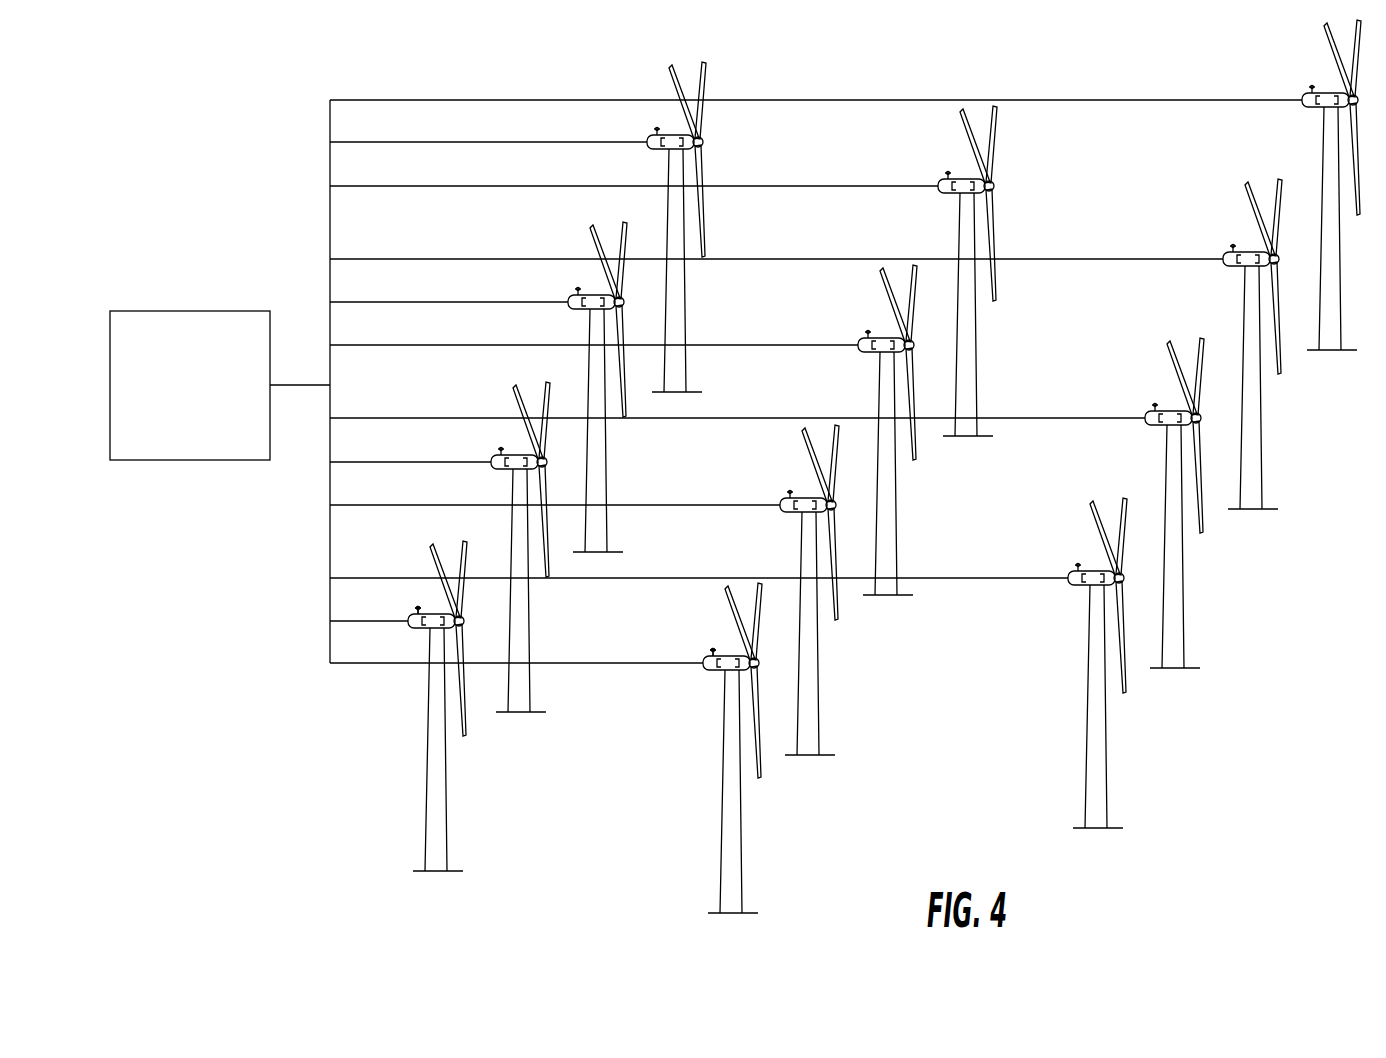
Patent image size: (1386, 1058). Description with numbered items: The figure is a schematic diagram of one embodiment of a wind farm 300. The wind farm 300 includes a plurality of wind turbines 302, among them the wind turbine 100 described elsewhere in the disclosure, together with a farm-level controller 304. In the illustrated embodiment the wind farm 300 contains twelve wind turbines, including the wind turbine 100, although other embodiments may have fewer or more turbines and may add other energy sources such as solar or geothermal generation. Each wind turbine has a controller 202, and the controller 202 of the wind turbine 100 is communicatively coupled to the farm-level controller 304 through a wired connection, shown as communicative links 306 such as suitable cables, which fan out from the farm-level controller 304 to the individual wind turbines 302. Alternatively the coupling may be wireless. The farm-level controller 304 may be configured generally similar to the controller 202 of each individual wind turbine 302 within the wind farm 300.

The wind farm 300 is at (235, 156).
The farm-level controller 304 is at (208, 395).
The communicative links 306 is at (497, 186).
The wind turbine 100 is at (452, 782).
The wind turbines 302 is at (532, 642).
The controller 202 is at (427, 605).